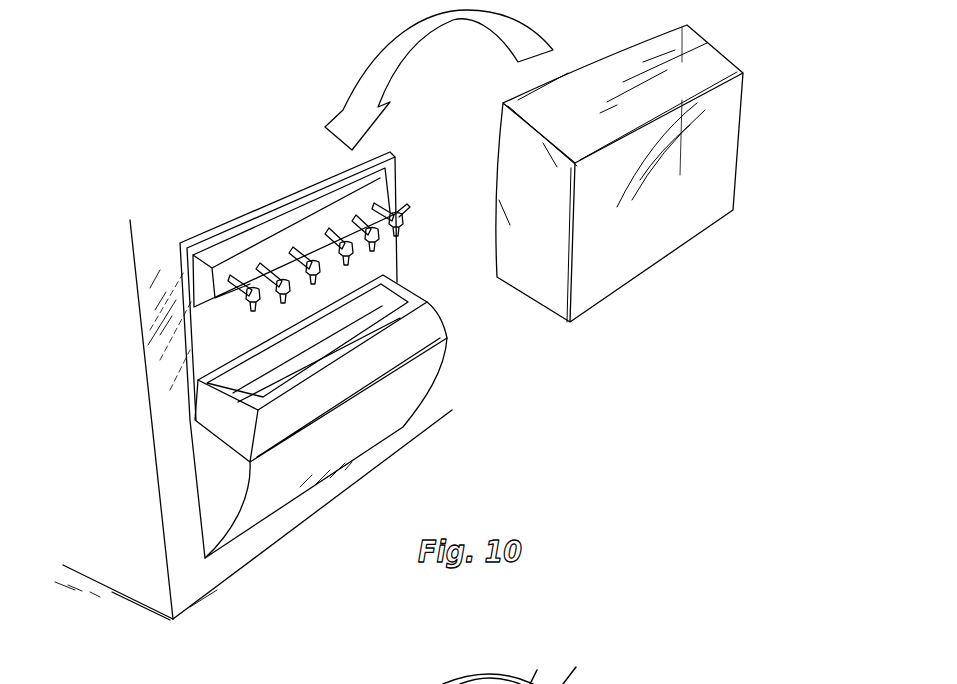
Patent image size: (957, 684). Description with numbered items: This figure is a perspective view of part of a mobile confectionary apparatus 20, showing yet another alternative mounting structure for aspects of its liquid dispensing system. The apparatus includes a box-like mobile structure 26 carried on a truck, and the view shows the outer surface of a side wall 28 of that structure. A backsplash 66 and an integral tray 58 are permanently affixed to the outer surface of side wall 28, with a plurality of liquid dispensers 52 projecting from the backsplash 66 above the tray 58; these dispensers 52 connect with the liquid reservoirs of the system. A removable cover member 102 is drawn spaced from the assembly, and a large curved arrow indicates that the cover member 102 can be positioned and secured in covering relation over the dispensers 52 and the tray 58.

The mobile confectionary apparatus 20 is at (110, 270).
The mobile structure 26 is at (112, 593).
The side wall 28 is at (197, 578).
The liquid dispensers 52 is at (247, 297).
The tray 58 is at (433, 302).
The backsplash 66 is at (205, 333).
The removable cover member 102 is at (735, 60).